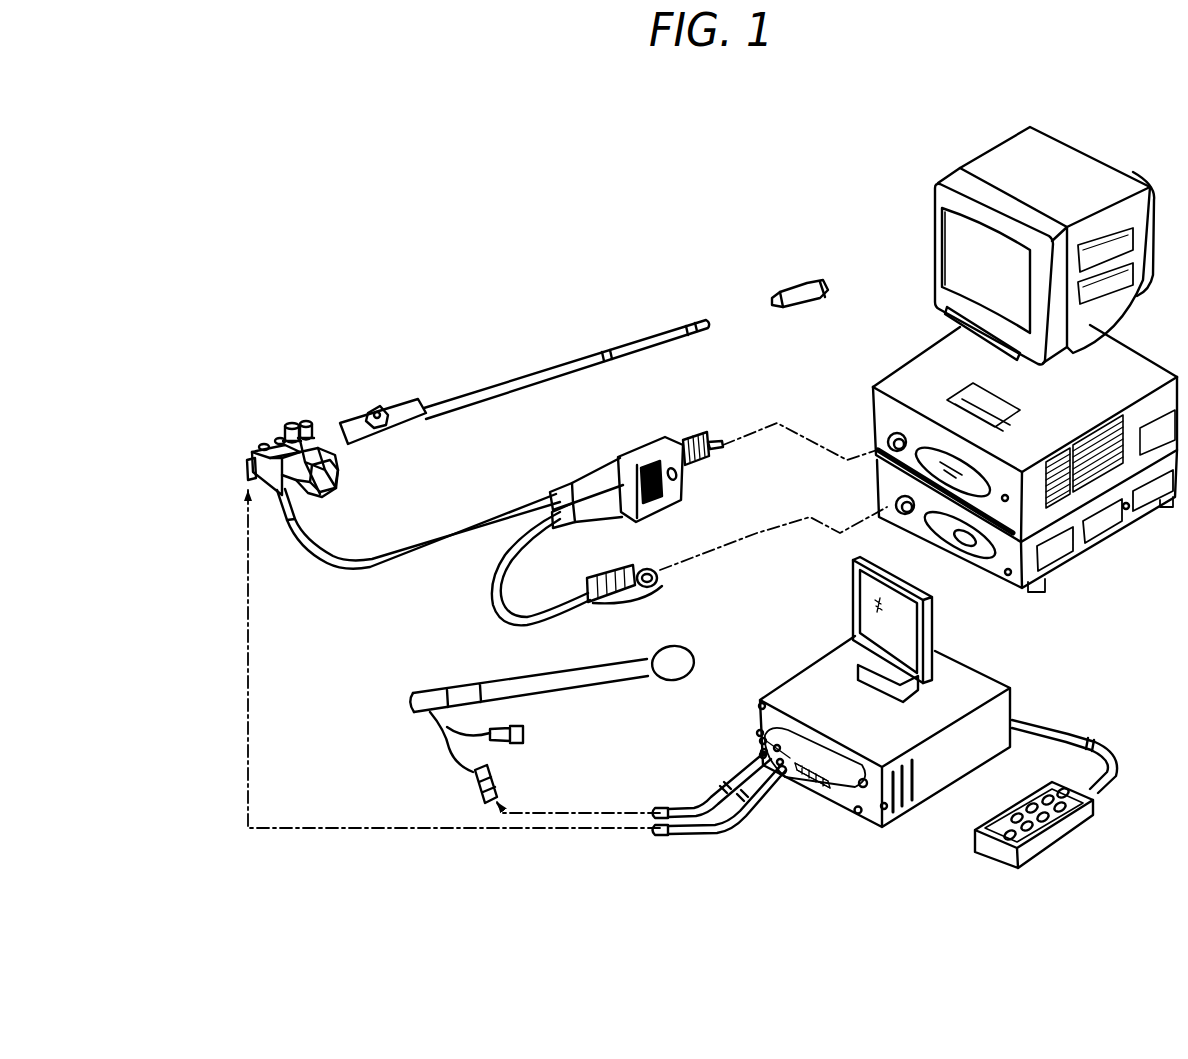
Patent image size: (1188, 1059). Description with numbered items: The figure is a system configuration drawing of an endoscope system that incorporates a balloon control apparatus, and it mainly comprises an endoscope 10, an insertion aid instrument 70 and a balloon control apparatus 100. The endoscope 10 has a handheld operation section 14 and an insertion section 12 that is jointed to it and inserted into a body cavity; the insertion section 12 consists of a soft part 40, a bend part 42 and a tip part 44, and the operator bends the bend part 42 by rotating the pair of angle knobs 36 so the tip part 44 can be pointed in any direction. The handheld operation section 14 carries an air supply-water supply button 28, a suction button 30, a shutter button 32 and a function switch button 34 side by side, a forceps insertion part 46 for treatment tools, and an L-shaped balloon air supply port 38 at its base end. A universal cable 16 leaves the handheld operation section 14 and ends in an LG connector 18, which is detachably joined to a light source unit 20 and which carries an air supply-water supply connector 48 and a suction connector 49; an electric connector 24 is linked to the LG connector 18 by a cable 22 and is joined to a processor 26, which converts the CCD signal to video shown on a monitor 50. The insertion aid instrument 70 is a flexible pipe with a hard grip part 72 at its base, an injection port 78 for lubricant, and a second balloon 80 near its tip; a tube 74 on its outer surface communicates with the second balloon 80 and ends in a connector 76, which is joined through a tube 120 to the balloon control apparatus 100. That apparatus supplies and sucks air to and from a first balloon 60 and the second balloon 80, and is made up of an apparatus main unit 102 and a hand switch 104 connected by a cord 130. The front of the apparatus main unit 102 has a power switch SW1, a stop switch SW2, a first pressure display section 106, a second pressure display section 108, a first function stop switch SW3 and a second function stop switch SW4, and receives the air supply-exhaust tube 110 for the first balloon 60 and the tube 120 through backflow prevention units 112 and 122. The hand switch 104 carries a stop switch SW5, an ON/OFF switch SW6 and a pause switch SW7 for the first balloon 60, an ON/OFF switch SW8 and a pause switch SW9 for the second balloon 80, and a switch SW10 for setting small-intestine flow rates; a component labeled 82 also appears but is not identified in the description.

The endoscope 10 is at (437, 285).
The insertion section 12 is at (537, 352).
The handheld operation section 14 is at (345, 423).
The universal cable 16 is at (412, 543).
The LG connector 18 is at (623, 445).
The light source unit 20 is at (873, 405).
The cable 22 is at (508, 560).
The electric connector 24 is at (613, 582).
The processor 26 is at (873, 493).
The air supply-water supply button 28 is at (305, 422).
The suction button 30 is at (292, 425).
The shutter button 32 is at (280, 437).
The function switch button 34 is at (262, 444).
The angle knob 36 is at (330, 468).
The balloon air supply port 38 is at (248, 470).
The soft part 40 is at (603, 357).
The bend part 42 is at (660, 330).
The tip part 44 is at (752, 307).
The forceps insertion part 46 is at (380, 412).
The air supply-water supply connector 48 is at (645, 441).
The suction connector 49 is at (676, 479).
The monitor 50 is at (927, 226).
The first balloon 60 is at (808, 282).
The insertion aid instrument 70 is at (497, 675).
The hard grip part 72 is at (425, 697).
The tube 74 is at (448, 748).
The connector 76 is at (473, 788).
The injection port 78 is at (515, 740).
The second balloon 80 is at (686, 650).
The display 82 is at (912, 616).
The balloon control apparatus 100 is at (830, 633).
The apparatus main unit 102 is at (803, 678).
The hand switch 104 is at (1097, 808).
The first pressure display section 106 is at (810, 790).
The second pressure display section 108 is at (808, 798).
The air supply-exhaust tube 110 is at (703, 832).
The backflow prevention unit 112 is at (783, 778).
The air supply-exhaust tube 120 is at (702, 797).
The backflow prevention unit 122 is at (760, 752).
The cord 130 is at (1066, 730).
The power switch SW1 is at (888, 810).
The stop switch SW2 is at (867, 770).
The first function stop switch SW3 is at (760, 700).
The second function stop switch SW4 is at (758, 730).
The stop switch SW5 is at (1010, 835).
The ON/OFF switch SW6 is at (1092, 810).
The pause switch SW7 is at (1040, 830).
The ON/OFF switch SW8 is at (1038, 797).
The pause switch SW9 is at (1010, 812).
The switch SW10 is at (1062, 785).